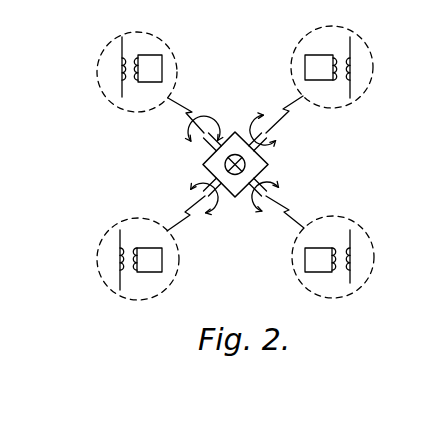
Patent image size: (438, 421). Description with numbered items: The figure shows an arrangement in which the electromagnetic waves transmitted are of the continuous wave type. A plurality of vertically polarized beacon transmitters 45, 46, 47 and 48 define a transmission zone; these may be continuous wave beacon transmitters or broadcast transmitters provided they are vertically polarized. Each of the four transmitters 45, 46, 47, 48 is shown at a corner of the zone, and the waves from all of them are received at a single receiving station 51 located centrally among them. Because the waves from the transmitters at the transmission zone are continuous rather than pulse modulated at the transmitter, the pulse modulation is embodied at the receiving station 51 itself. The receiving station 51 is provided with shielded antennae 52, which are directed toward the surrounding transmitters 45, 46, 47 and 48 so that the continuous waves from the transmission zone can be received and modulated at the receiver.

The vertically polarized beacon transmitter 45 is at (100, 70).
The vertically polarized beacon transmitter 46 is at (370, 74).
The vertically polarized beacon transmitter 47 is at (371, 269).
The vertically polarized beacon transmitter 48 is at (100, 261).
The receiving station 51 is at (273, 168).
The shielded antennae 52 is at (264, 114).